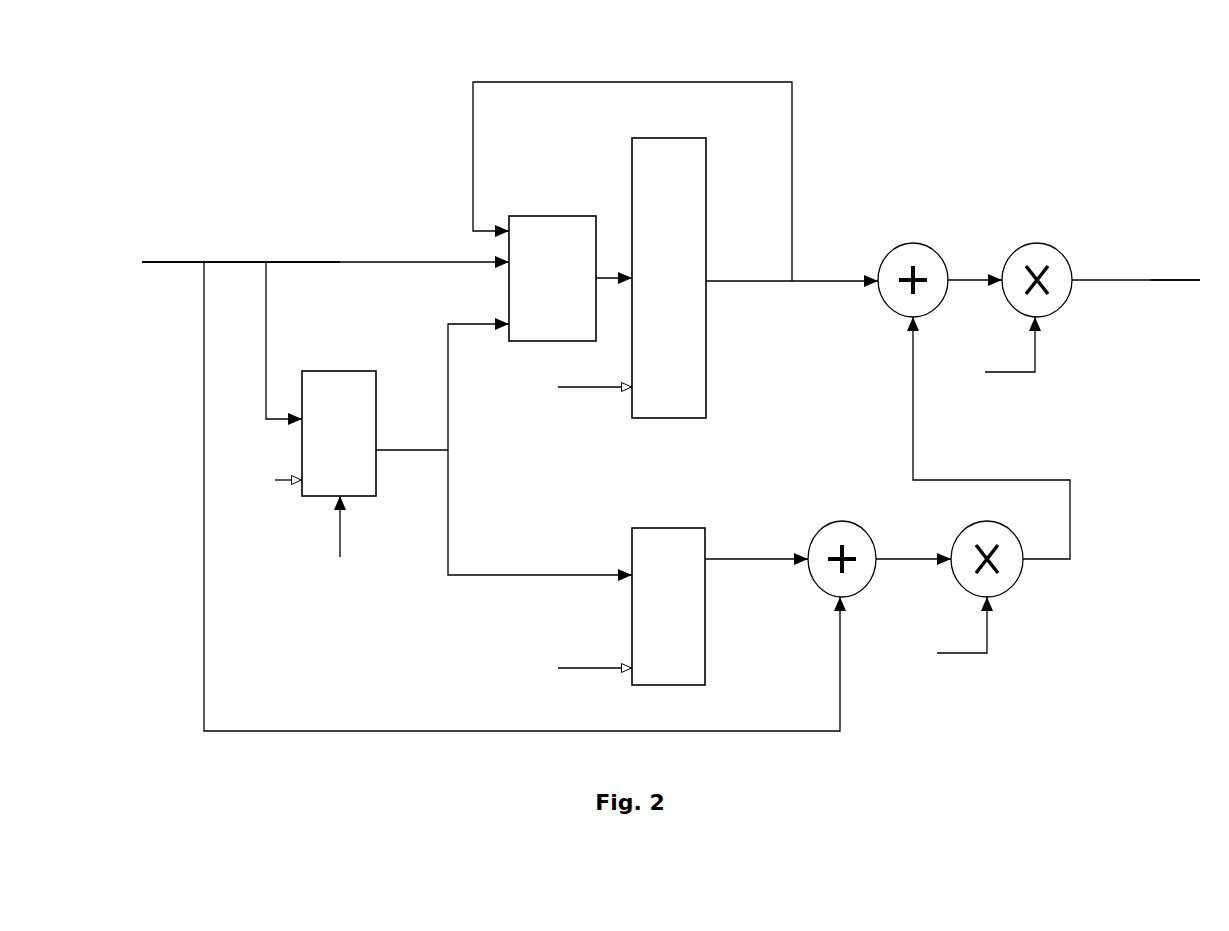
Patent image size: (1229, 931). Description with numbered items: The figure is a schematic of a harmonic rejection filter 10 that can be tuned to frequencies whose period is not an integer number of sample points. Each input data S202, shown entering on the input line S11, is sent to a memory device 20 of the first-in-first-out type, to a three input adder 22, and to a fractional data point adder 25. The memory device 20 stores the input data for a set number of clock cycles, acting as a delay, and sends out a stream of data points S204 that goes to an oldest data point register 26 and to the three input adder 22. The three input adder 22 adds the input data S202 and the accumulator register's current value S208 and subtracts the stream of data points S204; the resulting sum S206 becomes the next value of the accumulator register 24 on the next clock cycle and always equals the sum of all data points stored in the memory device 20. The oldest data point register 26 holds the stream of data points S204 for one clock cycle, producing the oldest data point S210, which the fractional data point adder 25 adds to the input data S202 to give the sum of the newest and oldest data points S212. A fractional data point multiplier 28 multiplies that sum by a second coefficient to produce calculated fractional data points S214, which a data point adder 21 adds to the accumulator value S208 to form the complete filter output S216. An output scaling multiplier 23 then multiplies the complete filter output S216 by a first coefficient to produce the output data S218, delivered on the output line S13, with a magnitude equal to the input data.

The harmonic rejection filter 10 is at (360, 183).
The memory device 20 is at (335, 378).
The data point adder 21 is at (905, 252).
The three input adder 22 is at (541, 336).
The output scaling multiplier 23 is at (1040, 253).
The accumulator register 24 is at (682, 336).
The fractional data point adder 25 is at (838, 528).
The oldest data point register 26 is at (692, 650).
The fractional data point multiplier 28 is at (1002, 578).
The input signal S11 is at (305, 243).
The output signal S13 is at (1163, 261).
The input data S202 is at (234, 256).
The stream of data points S204 is at (416, 446).
The sum S206 is at (609, 273).
The accumulator register's current value S208 is at (745, 276).
The oldest data point S210 is at (738, 555).
The sum of the newest and oldest data points S212 is at (896, 555).
The calculated fractional data points S214 is at (965, 477).
The complete filter output S216 is at (970, 276).
The output data S218 is at (1090, 275).